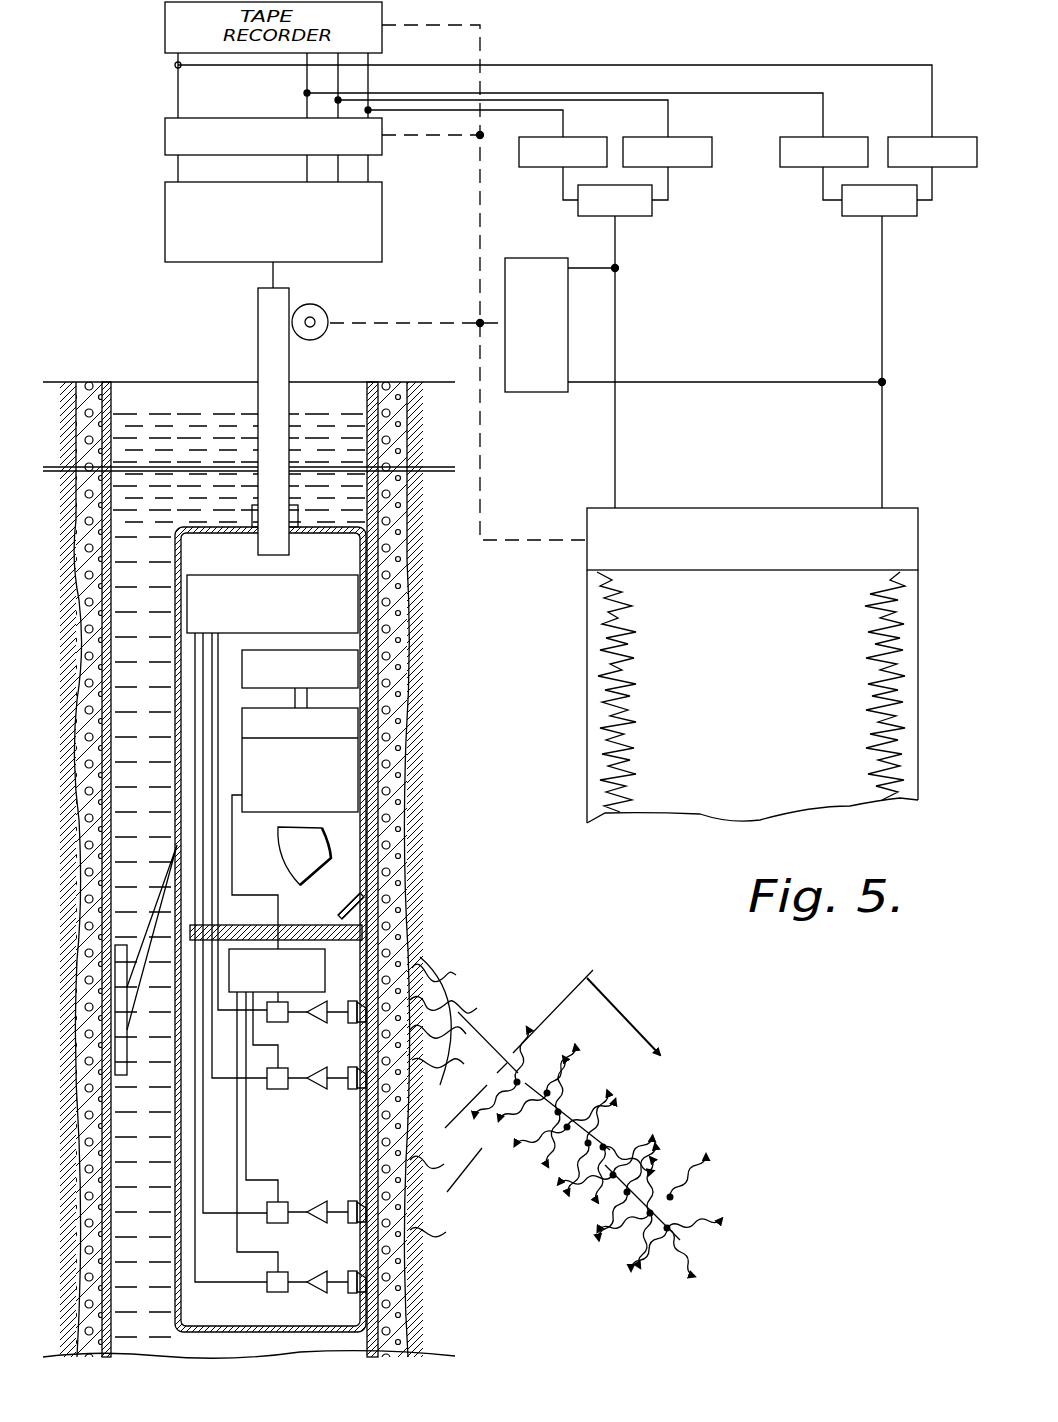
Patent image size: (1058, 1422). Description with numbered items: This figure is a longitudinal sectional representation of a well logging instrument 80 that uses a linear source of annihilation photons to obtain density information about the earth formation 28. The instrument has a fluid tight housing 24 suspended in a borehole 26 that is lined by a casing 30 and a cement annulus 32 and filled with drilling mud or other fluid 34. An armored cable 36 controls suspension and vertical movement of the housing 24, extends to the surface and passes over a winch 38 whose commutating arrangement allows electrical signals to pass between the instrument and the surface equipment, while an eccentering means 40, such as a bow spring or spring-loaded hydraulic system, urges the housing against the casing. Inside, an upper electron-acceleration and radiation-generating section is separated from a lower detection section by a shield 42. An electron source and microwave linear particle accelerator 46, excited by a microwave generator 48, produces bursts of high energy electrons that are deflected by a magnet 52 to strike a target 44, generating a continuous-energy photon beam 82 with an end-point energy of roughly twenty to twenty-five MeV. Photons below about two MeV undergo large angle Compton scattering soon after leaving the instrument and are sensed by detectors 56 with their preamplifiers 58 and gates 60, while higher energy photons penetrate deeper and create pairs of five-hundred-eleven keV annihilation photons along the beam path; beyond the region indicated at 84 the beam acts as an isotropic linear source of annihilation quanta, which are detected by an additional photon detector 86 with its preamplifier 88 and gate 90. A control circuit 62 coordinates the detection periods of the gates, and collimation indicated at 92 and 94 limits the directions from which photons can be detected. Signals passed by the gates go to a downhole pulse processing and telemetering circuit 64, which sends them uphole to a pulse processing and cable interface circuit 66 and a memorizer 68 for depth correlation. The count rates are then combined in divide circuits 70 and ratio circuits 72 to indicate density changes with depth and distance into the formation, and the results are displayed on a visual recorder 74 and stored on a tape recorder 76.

The fluid tight housing 24 is at (173, 700).
The borehole 26 is at (72, 637).
The earth formation 28 is at (428, 620).
The casing 30 is at (112, 395).
The cement annulus 32 is at (67, 533).
The fluid 34 is at (168, 425).
The armored cable 36 is at (258, 305).
The winch 38 is at (326, 306).
The eccentering means 40 is at (120, 1043).
The shield 42 is at (292, 925).
The target 44 is at (352, 897).
The electron source and microwave linear particle accelerator 46 is at (350, 750).
The microwave generator 48 is at (358, 685).
The magnet 52 is at (278, 850).
The detector 56 is at (355, 1095).
The preamplifier 58 is at (318, 1067).
The gate 60 is at (278, 1022).
The control circuit 62 is at (325, 958).
The pulse processing and telemetering circuit 64 is at (203, 575).
The pulse processing and cable interface circuit 66 is at (165, 210).
The memorizer 68 is at (165, 133).
The divide circuit 70 is at (643, 136).
The ratio circuit 72 is at (642, 216).
The visual recorder 74 is at (587, 548).
The tape recorder 76 is at (528, 258).
The well logging instrument 80 is at (158, 528).
The photon beam 82 is at (458, 1012).
The annihilation source region 84 is at (572, 990).
The additional photon detector 86 is at (355, 1271).
The preamplifier 88 is at (325, 1228).
The gate 90 is at (280, 1223).
The collimator 92 is at (378, 1302).
The collimator 94 is at (352, 1200).